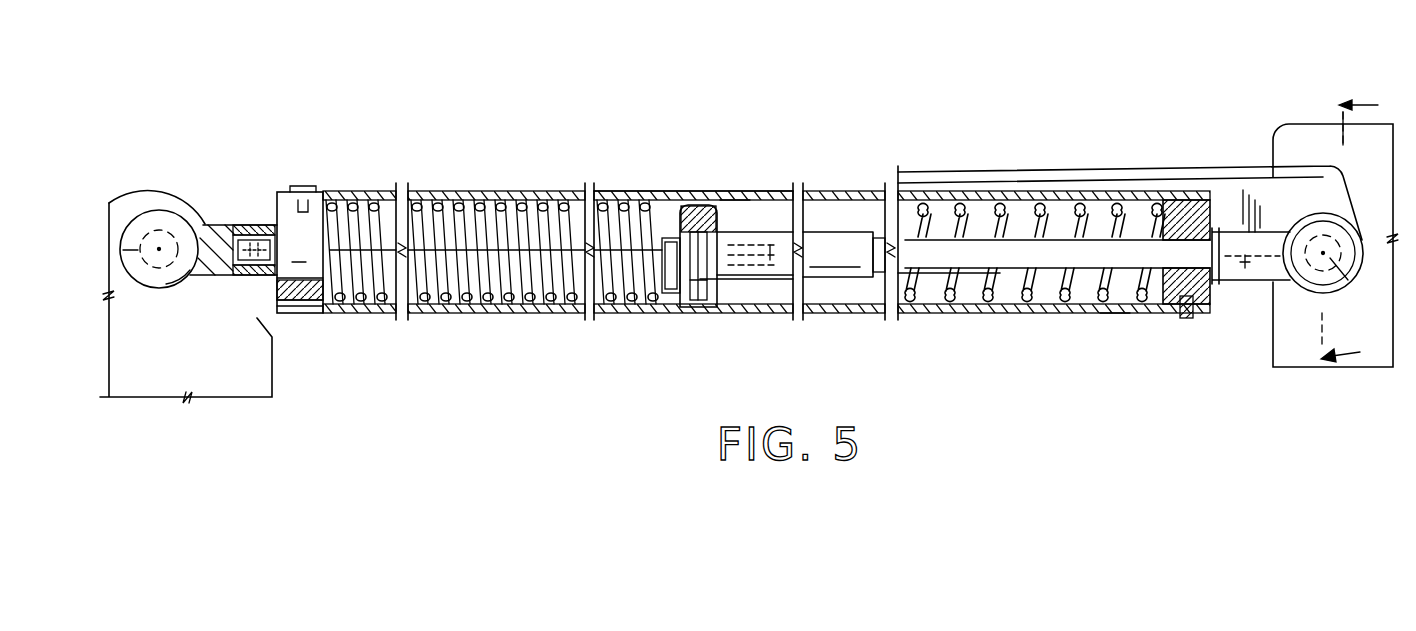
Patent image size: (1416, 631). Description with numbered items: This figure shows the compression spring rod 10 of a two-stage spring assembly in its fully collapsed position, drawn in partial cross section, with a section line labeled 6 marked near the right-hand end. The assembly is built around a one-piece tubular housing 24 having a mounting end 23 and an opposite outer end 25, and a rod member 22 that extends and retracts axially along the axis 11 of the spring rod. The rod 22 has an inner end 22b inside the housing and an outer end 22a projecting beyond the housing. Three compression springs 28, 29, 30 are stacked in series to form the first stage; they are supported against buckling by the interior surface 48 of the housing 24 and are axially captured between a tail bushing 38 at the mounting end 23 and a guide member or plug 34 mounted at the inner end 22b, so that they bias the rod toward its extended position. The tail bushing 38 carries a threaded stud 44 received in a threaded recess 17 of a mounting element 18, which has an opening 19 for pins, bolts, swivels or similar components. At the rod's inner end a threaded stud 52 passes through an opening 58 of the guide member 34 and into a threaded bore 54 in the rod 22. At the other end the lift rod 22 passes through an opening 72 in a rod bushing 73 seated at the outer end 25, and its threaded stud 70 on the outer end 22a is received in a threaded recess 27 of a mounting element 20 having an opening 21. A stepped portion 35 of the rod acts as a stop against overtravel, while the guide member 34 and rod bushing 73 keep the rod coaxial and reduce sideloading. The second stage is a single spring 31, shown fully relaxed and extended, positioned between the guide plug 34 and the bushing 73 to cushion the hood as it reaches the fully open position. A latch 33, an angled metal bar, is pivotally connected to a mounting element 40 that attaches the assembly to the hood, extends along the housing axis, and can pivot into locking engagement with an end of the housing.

The compression spring rod 10 is at (640, 192).
The axis 11 is at (487, 215).
The threaded recess 17 is at (265, 263).
The mounting element 18 is at (200, 222).
The opening 19 is at (158, 237).
The mounting element 20 is at (1258, 282).
The opening 21 is at (1352, 292).
The rod member 22 is at (950, 250).
The outer end 22a is at (1183, 318).
The inner end 22b is at (733, 195).
The mounting end 23 is at (283, 200).
The tubular housing 24 is at (551, 195).
The outer end 25 is at (1193, 205).
The threaded recess 27 is at (1236, 250).
The compression spring 28 is at (328, 312).
The compression spring 29 is at (495, 302).
The compression spring 30 is at (615, 305).
The spring 31 is at (985, 290).
The latch 33 is at (905, 170).
The guide member 34 is at (695, 307).
The stepped portion 35 is at (883, 303).
The tail bushing 38 is at (292, 312).
The mounting element 40 is at (1292, 123).
The threaded stud 44 is at (257, 300).
The interior surface 48 is at (790, 195).
The threaded stud 52 is at (660, 305).
The threaded bore 54 is at (760, 247).
The opening 58 is at (710, 310).
The section line 6- 6 is at (1337, 241).
The threaded stud 70 is at (1234, 285).
The opening 72 is at (1113, 320).
The rod bushing 73 is at (1165, 212).